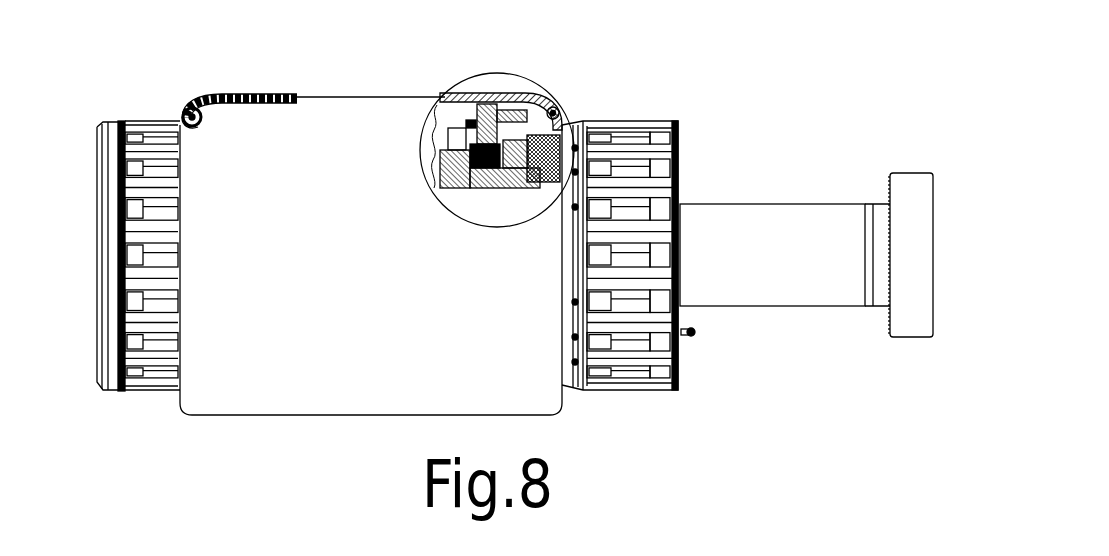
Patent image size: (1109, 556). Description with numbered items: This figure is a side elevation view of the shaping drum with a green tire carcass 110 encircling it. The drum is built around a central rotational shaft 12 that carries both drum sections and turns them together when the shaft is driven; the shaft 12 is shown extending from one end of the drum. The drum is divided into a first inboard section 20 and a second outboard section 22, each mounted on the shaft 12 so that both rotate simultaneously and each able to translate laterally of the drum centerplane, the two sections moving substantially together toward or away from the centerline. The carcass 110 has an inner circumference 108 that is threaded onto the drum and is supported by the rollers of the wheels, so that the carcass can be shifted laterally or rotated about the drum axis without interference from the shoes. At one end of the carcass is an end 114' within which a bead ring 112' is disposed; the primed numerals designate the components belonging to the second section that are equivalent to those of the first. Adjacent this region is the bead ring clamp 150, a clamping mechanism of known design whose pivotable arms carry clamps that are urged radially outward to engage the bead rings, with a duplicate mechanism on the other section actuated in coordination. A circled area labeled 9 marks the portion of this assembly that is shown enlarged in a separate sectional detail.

The central shaft 12 is at (748, 204).
The first (inboard) section 20 is at (641, 116).
The second (outboard) section 22 is at (139, 118).
The carcass 110 is at (350, 97).
The inner circumference of the carcass 108 is at (453, 97).
The bead ring clamp 150 is at (555, 104).
The end of the carcass 114' is at (236, 72).
The bead ring 112' is at (227, 127).
The section line for FIG. 9 is at (453, 78).